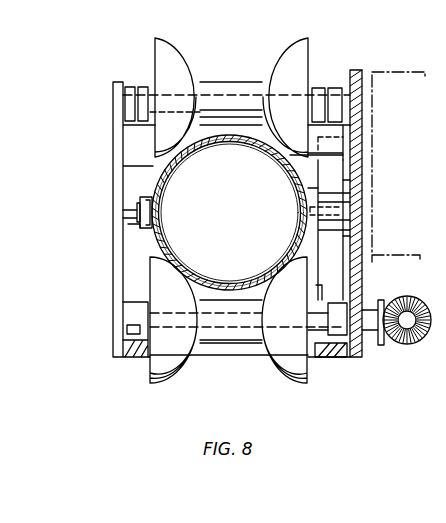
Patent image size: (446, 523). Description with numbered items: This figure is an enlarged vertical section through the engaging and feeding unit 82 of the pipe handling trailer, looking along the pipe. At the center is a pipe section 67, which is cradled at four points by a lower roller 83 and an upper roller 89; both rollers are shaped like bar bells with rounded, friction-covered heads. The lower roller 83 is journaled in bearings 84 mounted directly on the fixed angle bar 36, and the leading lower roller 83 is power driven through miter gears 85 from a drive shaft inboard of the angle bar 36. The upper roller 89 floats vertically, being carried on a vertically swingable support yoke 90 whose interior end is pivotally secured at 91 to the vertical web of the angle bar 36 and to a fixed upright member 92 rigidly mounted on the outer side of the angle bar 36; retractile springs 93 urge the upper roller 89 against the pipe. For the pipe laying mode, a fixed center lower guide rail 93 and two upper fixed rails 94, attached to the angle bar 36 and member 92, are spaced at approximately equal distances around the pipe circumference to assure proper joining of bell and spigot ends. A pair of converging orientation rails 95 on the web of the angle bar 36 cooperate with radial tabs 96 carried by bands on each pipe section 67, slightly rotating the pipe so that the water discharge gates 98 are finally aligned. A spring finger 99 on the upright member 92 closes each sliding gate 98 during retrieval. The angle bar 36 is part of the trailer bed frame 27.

The upper rollers 89 is at (304, 40).
The pivot 91 is at (241, 88).
The support yokes 90 is at (321, 87).
The engaging and feeding unit 82 is at (362, 70).
The bed frame 27 is at (373, 148).
The upper fixed rails 94 is at (262, 158).
The radial tabs 96 is at (308, 189).
The pipe section 67 is at (293, 249).
The converging guide rails 95 is at (343, 237).
The water discharge gates 98 is at (145, 201).
The upright member 92 is at (123, 226).
The spring finger 99 is at (134, 229).
The bearings 84 is at (127, 310).
The center lower guide rail 93 is at (227, 330).
The lower rollers 83 is at (288, 366).
The angle bar 36 is at (347, 358).
The miter gears 85 is at (396, 344).